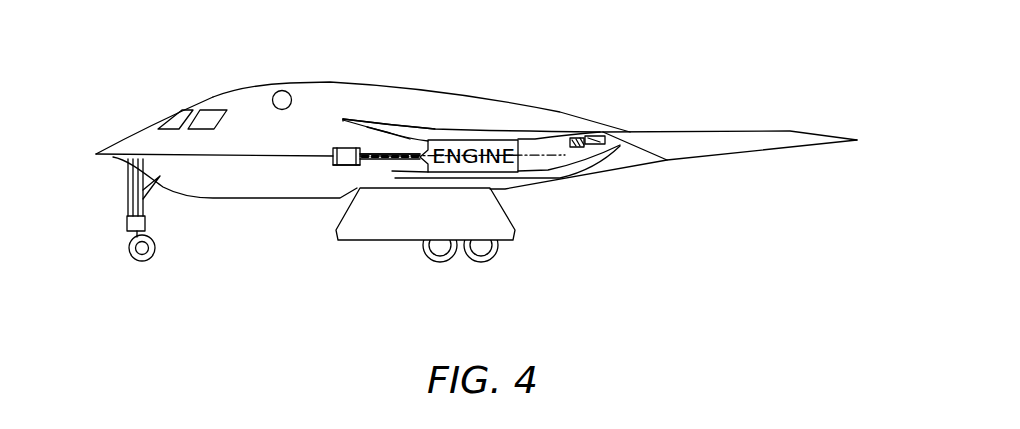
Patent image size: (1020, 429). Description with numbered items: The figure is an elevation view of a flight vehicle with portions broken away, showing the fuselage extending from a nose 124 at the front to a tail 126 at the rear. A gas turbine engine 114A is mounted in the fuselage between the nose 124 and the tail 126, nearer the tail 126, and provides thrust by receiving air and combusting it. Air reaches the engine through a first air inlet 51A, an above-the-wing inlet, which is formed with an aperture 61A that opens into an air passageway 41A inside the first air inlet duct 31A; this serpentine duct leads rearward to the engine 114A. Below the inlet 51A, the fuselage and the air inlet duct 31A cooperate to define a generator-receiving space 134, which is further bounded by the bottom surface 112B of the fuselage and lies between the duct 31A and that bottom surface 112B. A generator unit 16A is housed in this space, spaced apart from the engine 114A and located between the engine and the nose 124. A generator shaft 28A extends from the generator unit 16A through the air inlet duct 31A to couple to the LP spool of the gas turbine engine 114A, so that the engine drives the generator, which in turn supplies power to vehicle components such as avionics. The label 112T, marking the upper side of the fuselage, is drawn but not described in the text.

The nose 124 is at (95, 170).
The tail 126 is at (857, 130).
The top surface of fuselage 112T is at (427, 127).
The bottom surface of the fuselage 112B is at (525, 188).
The gas turbine engine 114A is at (492, 128).
The air passageway 41A is at (350, 130).
The first air inlet 51A is at (347, 112).
The aperture 61A is at (347, 134).
The first air inlet duct 31A is at (373, 132).
The generator-receiving space 134 is at (336, 172).
The generator unit 16A is at (348, 172).
The generator shaft 28A is at (345, 122).